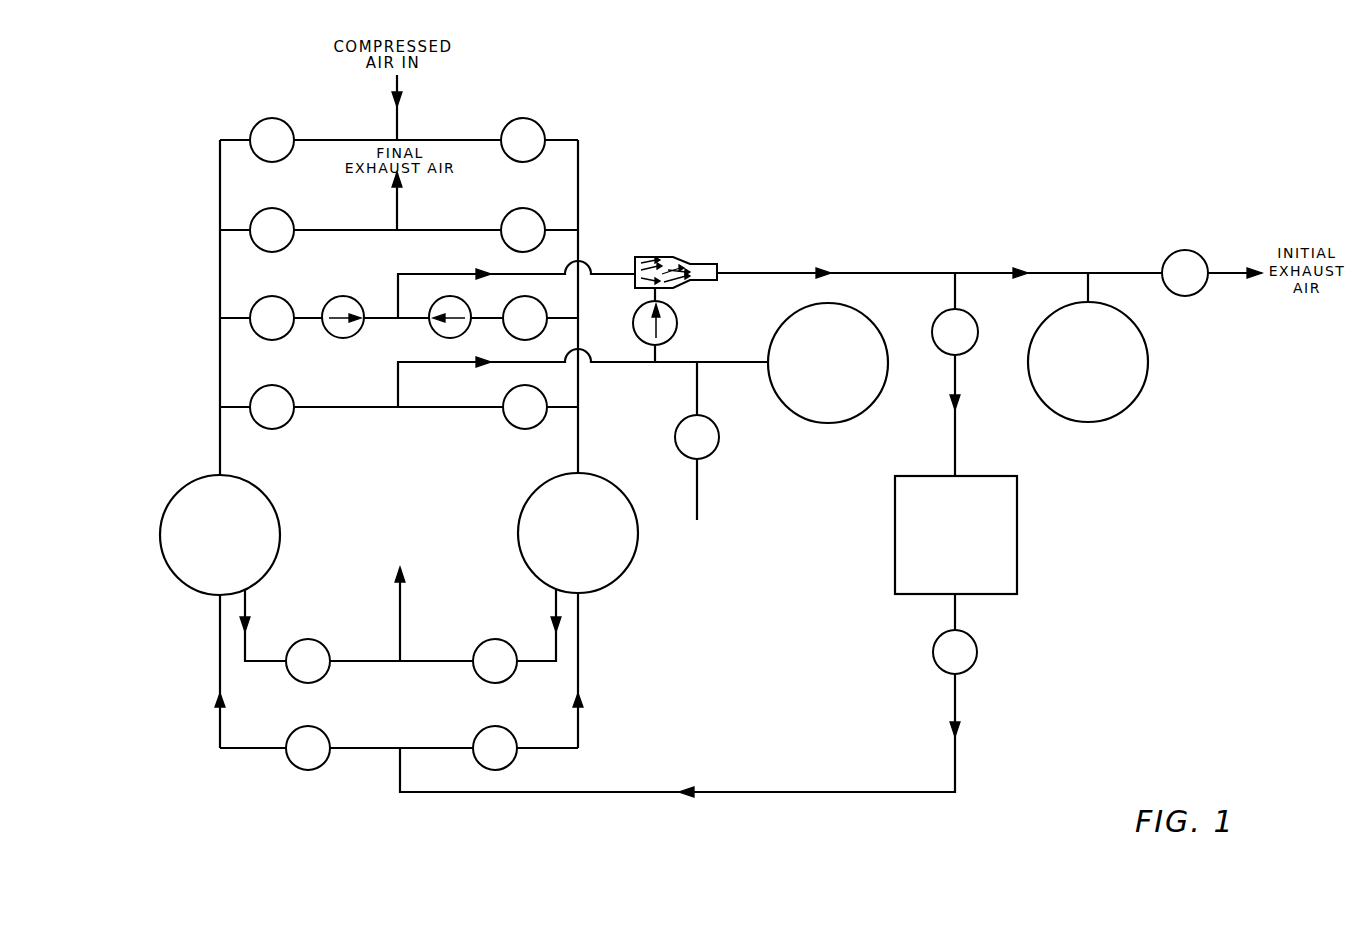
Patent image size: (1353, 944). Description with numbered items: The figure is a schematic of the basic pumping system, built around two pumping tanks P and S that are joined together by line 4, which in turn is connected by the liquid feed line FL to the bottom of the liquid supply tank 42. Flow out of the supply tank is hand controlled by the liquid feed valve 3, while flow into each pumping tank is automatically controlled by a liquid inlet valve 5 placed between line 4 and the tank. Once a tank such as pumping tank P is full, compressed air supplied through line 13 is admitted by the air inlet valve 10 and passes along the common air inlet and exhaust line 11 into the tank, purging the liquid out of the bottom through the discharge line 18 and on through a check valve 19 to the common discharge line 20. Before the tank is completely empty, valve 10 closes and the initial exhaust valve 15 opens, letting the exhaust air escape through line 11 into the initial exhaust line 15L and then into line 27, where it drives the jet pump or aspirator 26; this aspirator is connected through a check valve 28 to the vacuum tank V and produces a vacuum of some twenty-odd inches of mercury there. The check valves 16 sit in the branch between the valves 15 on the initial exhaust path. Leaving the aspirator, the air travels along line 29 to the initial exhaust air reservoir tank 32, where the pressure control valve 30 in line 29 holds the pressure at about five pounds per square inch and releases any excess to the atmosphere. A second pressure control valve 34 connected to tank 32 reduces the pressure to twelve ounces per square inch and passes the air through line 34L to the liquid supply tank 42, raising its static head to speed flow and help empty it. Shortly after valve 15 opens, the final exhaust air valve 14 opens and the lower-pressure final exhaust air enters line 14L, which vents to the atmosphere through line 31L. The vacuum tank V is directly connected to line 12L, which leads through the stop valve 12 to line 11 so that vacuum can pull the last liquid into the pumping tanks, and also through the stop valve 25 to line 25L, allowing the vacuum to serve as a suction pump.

The liquid feed valve 3 is at (972, 638).
The line 4 is at (380, 748).
The liquid inlet valve 5 is at (323, 733).
The air inlet valve 10 is at (289, 126).
The common air inlet and exhaust line 11 is at (219, 432).
The stop valve 12 is at (287, 393).
The line 12L is at (441, 409).
The line 13 is at (403, 140).
The final exhaust air valve 14 is at (288, 216).
The line 14L is at (443, 231).
The initial exhaust valve 15 is at (285, 301).
The initial exhaust line 15L is at (418, 320).
The check valve 16 is at (330, 333).
The discharge line 18 is at (430, 661).
The check valve 19 is at (319, 643).
The common discharge line 20 is at (403, 613).
The stop valve 25 is at (683, 423).
The line 25L is at (698, 500).
The jet pump or aspirator 26 is at (653, 257).
The line 27 is at (521, 272).
The check valve 28 is at (677, 314).
The line 29 is at (926, 272).
The pressure control valve 30 is at (1200, 258).
The line 31L is at (397, 200).
The initial exhaust air reservoir tank 32 is at (1132, 402).
The pressure control valve 34 is at (969, 317).
The line 34L is at (956, 443).
The liquid supply tank 42 is at (1017, 540).
The pumping tank S is at (172, 495).
The pumping tank P is at (531, 493).
The vacuum tank V is at (862, 410).
The liquid feed line FL is at (792, 792).